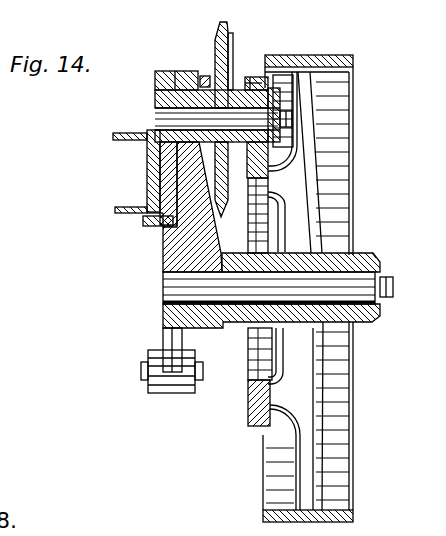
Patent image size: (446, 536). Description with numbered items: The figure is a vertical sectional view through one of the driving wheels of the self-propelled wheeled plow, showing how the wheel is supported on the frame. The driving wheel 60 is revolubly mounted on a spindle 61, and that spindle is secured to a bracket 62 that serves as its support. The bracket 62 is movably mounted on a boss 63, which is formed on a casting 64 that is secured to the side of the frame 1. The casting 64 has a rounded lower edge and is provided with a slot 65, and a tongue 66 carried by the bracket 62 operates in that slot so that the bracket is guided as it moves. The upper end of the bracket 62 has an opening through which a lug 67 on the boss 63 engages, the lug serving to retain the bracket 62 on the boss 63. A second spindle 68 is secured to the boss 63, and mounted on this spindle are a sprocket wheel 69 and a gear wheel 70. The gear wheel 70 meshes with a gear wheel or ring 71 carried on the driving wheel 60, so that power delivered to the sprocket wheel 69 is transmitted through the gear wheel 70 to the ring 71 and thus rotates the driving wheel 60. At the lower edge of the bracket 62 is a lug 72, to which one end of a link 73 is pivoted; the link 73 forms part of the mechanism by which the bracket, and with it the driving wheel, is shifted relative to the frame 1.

The frame 1 is at (136, 210).
The driving wheel 60 is at (352, 378).
The spindle 61 is at (172, 292).
The bracket 62 is at (178, 261).
The boss 63 is at (205, 77).
The casting 64 is at (160, 167).
The slot 65 is at (144, 222).
The tongue 66 is at (165, 228).
The lug 67 is at (233, 44).
The spindle 68 is at (158, 119).
The sprocket wheel 69 is at (216, 41).
The gear wheel 70 is at (250, 78).
The gear wheel or ring 71 is at (249, 413).
The lug 72 is at (170, 343).
The link 73 is at (155, 393).